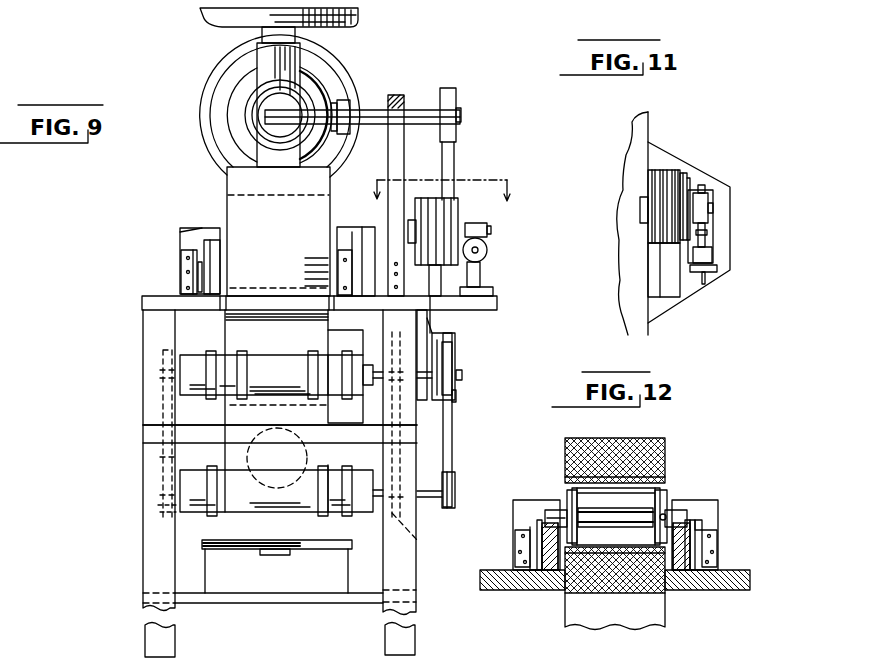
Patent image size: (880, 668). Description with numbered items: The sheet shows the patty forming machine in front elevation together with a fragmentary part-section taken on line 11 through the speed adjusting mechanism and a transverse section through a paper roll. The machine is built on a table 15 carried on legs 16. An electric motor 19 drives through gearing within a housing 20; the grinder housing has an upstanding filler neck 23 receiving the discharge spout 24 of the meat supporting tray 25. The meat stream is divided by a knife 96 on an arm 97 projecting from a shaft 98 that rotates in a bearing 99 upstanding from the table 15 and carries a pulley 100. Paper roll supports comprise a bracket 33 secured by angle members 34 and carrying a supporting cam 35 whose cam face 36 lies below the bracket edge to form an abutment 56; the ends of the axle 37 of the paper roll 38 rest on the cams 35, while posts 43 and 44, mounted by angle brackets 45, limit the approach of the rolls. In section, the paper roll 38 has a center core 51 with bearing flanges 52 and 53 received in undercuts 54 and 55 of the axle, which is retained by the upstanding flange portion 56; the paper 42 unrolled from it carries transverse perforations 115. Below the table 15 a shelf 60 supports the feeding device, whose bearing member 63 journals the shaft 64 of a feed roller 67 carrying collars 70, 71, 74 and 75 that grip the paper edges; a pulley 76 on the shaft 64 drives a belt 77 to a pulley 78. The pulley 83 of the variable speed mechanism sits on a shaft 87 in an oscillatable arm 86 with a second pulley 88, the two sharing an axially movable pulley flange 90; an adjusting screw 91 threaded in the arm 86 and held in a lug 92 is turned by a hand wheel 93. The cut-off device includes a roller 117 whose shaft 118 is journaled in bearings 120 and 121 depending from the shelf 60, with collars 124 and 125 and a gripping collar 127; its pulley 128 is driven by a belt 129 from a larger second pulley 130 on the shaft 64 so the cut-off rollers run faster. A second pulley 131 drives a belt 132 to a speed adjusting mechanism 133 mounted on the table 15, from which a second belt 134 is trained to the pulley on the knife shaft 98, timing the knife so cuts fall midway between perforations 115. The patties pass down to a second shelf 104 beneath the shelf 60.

In FIG. 9, the section line 11 is at (443, 181).
In FIG. 9, the table 15 is at (143, 302).
In FIG. 11, the table 15 is at (648, 122).
In FIG. 12, the table 15 is at (750, 580).
In FIG. 9, the legs 16 is at (170, 640).
In FIG. 9, the electric motor 19 is at (333, 78).
In FIG. 9, the housing 20 is at (242, 143).
In FIG. 9, the filler neck 23 is at (297, 57).
In FIG. 9, the discharge spout 24 is at (262, 33).
In FIG. 9, the meat supporting tray 25 is at (207, 15).
In FIG. 9, the bracket 33 is at (180, 252).
In FIG. 12, the bracket 33 is at (540, 573).
In FIG. 9, the angle members 34 is at (202, 275).
In FIG. 12, the angle members 34 is at (525, 571).
In FIG. 9, the supporting cam 35 is at (215, 252).
In FIG. 12, the supporting cam 35 is at (553, 572).
In FIG. 12, the cam face 36 is at (525, 533).
In FIG. 9, the axle 37 is at (180, 232).
In FIG. 12, the axle 37 is at (718, 503).
In FIG. 12, the paper roll 38 is at (640, 442).
In FIG. 12, the paper 42 is at (597, 617).
In FIG. 9, the post 43 is at (360, 230).
In FIG. 12, the post 43 is at (700, 503).
In FIG. 9, the post 44 is at (210, 233).
In FIG. 12, the post 44 is at (530, 503).
In FIG. 9, the angle brackets 45 is at (182, 268).
In FIG. 12, the angle brackets 45 is at (517, 557).
In FIG. 12, the center core 51 is at (588, 487).
In FIG. 12, the bearing flange 52 is at (567, 493).
In FIG. 12, the bearing flange 53 is at (662, 507).
In FIG. 12, the undercut 54 is at (547, 516).
In FIG. 12, the undercut 55 is at (667, 517).
In FIG. 12, the abutment 56 is at (718, 525).
In FIG. 9, the shelf 60 is at (177, 447).
In FIG. 9, the bearing member 63 is at (163, 360).
In FIG. 9, the feed roller shaft 64 is at (463, 377).
In FIG. 9, the feed roller 67 is at (280, 360).
In FIG. 9, the collar 70 is at (352, 345).
In FIG. 9, the collar 71 is at (210, 352).
In FIG. 9, the collar 74 is at (313, 352).
In FIG. 9, the collar 75 is at (242, 352).
In FIG. 9, the pulley 76 is at (447, 347).
In FIG. 9, the belt 77 is at (438, 360).
In FIG. 9, the pulley 78 is at (447, 333).
In FIG. 9, the pulley 83 is at (415, 197).
In FIG. 11, the pulley 83 is at (650, 237).
In FIG. 9, the arm 86 is at (490, 230).
In FIG. 11, the arm 86 is at (712, 197).
In FIG. 11, the shaft 87 is at (710, 210).
In FIG. 9, the second pulley 88 is at (458, 205).
In FIG. 11, the second pulley 88 is at (690, 182).
In FIG. 11, the pulley flange 90 is at (672, 177).
In FIG. 9, the adjusting screw 91 is at (481, 242).
In FIG. 11, the adjusting screw 91 is at (707, 233).
In FIG. 9, the lug 92 is at (480, 270).
In FIG. 11, the lug 92 is at (712, 257).
In FIG. 9, the hand wheel 93 is at (463, 290).
In FIG. 11, the hand wheel 93 is at (717, 271).
In FIG. 9, the knife 96 is at (287, 137).
In FIG. 9, the arm 97 is at (348, 102).
In FIG. 9, the knife shaft 98 is at (352, 118).
In FIG. 9, the bearing 99 is at (396, 98).
In FIG. 9, the pulley 100 is at (456, 100).
In FIG. 9, the second shelf 104 is at (240, 596).
In FIG. 9, the perforations 115 is at (283, 195).
In FIG. 9, the cut-off roller 117 is at (258, 500).
In FIG. 9, the shaft 118 is at (427, 497).
In FIG. 9, the bearing 120 is at (417, 545).
In FIG. 9, the bearing 121 is at (168, 512).
In FIG. 9, the collar 124 is at (346, 516).
In FIG. 9, the collar 125 is at (209, 516).
In FIG. 9, the gripping collar 127 is at (322, 516).
In FIG. 9, the pulley 128 is at (466, 570).
In FIG. 9, the belt 129 is at (452, 443).
In FIG. 9, the second pulley 130 is at (456, 400).
In FIG. 9, the second pulley 131 is at (421, 400).
In FIG. 9, the belt 132 is at (437, 320).
In FIG. 11, the belt 132 is at (660, 263).
In FIG. 9, the speed adjusting mechanism 133 is at (512, 252).
In FIG. 9, the second belt 134 is at (455, 170).
In FIG. 11, the second belt 134 is at (685, 177).